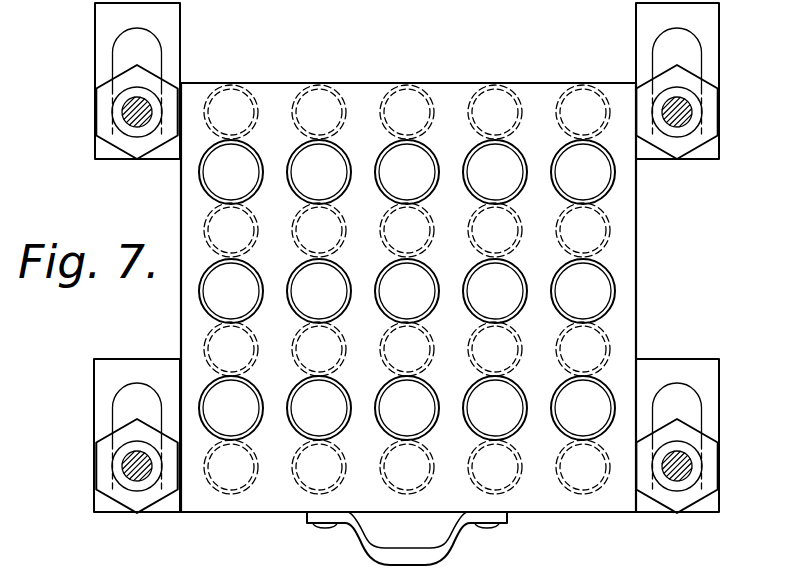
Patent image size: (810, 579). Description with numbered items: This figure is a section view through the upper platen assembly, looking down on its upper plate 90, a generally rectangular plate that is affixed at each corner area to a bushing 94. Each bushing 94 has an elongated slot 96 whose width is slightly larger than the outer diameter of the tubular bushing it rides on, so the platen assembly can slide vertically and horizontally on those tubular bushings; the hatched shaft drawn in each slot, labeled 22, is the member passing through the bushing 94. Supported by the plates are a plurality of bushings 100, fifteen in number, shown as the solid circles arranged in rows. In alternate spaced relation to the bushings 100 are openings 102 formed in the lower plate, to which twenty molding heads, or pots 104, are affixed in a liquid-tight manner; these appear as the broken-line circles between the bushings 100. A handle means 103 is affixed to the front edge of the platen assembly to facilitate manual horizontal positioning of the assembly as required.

The bolt 22 is at (124, 112).
The upper plate 90 is at (640, 265).
The bushing 94 is at (101, 45).
The elongated slot 96 is at (156, 53).
The bushings 100 is at (201, 181).
The openings 102 is at (292, 95).
The handle means 103 is at (468, 539).
The molding heads, or pots 104 is at (385, 100).